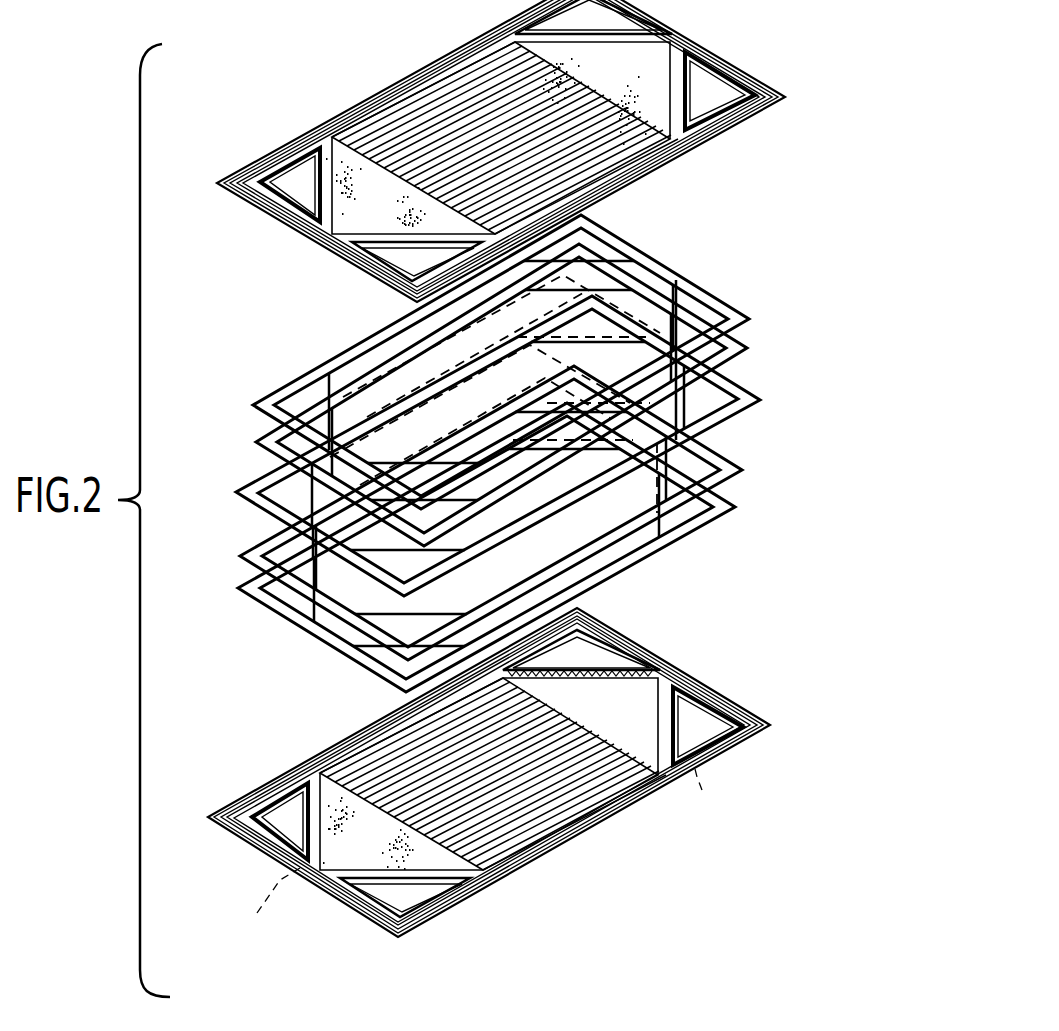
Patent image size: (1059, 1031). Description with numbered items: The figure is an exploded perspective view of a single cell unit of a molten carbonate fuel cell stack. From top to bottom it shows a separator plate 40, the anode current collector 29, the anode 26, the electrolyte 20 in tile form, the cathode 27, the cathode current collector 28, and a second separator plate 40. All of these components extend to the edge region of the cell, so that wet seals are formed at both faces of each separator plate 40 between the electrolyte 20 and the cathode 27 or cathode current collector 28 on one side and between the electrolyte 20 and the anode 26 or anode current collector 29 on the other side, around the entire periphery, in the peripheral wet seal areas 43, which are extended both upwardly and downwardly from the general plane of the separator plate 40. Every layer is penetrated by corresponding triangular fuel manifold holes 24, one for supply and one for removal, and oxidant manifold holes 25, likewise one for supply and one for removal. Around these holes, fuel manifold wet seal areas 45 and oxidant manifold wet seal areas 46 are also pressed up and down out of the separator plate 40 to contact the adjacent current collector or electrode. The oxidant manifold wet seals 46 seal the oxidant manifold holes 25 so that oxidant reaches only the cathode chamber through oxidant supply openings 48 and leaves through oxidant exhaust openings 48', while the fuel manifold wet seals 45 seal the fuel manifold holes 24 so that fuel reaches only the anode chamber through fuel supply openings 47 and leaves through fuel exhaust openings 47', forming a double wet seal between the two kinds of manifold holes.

The electrolyte 20 is at (747, 387).
The fuel manifold holes 24 is at (252, 197).
The oxidant manifold holes 25 is at (340, 258).
The anode 26 is at (740, 337).
The cathode 27 is at (725, 470).
The cathode current collector 28 is at (702, 522).
The anode current collector 29 is at (673, 275).
The separator plate 40 is at (697, 152).
The peripheral wet seal areas 43 is at (373, 103).
The fuel manifold wet seal areas 45 is at (297, 170).
The oxidant manifold wet seal areas 46 is at (395, 284).
The fuel supply openings 47 is at (261, 906).
The fuel exhaust openings 47' is at (715, 789).
The oxidant supply openings 48 is at (493, 795).
The oxidant exhaust openings 48' is at (661, 668).